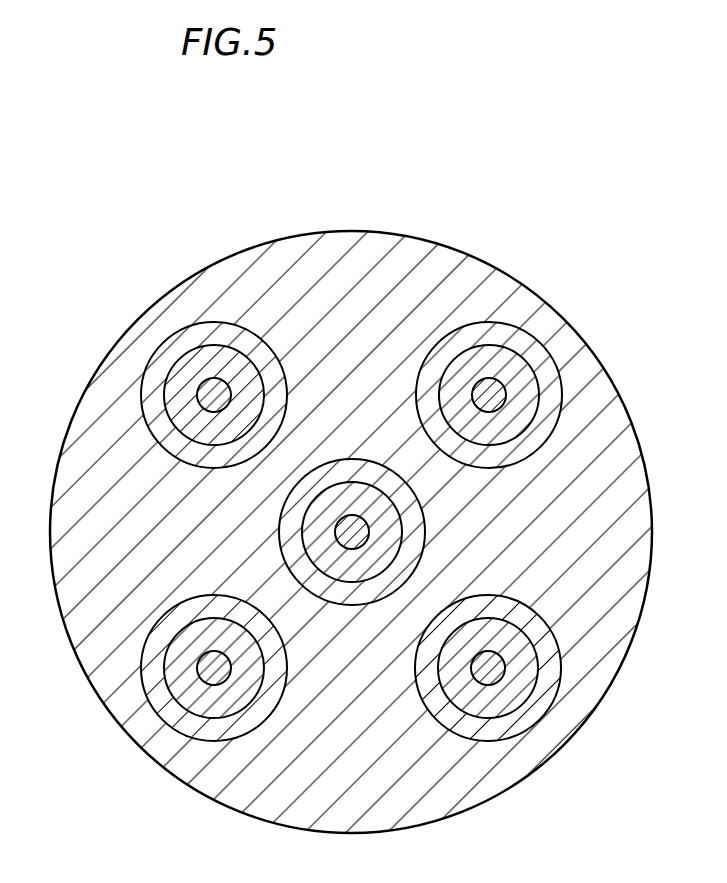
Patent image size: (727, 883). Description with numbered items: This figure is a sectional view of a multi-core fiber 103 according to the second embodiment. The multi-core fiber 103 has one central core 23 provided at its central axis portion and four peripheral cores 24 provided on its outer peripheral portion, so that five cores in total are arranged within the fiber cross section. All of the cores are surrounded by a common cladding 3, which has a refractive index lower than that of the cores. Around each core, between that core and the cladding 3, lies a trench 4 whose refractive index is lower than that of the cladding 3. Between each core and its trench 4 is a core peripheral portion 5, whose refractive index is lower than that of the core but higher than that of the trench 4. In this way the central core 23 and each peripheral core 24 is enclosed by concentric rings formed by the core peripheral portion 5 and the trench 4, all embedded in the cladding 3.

The multi-core fiber 103 is at (113, 308).
The cladding 3 is at (72, 650).
The trench 4 is at (176, 457).
The core peripheral portion 5 is at (175, 430).
The central core 23 is at (369, 529).
The peripheral core 24 is at (227, 383).